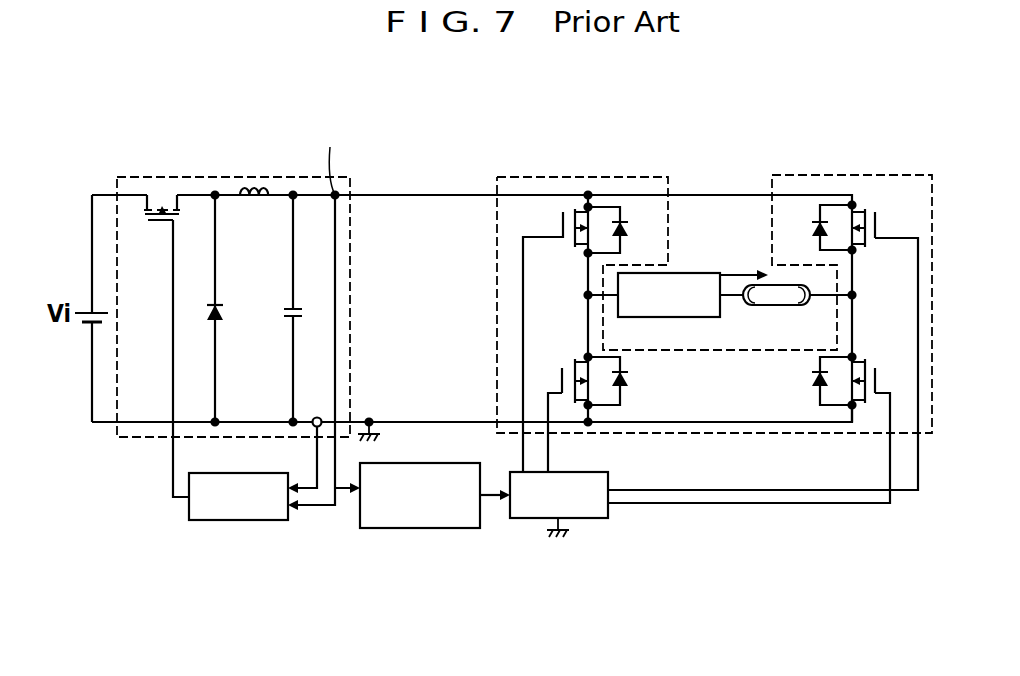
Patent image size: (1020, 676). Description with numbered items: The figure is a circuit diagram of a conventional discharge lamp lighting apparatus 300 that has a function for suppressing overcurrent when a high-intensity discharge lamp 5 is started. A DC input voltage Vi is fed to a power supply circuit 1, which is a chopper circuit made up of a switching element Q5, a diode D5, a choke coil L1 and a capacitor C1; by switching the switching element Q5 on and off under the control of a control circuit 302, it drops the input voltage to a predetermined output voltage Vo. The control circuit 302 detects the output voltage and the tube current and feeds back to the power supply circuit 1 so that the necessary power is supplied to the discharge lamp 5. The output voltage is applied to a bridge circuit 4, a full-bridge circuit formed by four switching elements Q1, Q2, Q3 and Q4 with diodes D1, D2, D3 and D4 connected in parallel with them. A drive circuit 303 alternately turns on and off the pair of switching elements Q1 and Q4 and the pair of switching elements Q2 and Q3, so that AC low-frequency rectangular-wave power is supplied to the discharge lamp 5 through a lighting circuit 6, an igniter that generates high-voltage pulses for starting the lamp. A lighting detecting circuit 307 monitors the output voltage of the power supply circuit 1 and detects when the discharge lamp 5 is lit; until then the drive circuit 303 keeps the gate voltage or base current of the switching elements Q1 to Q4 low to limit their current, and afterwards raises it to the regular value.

The power supply circuit 1 is at (340, 185).
The bridge circuit 4 is at (662, 187).
The discharge lamp 5 is at (793, 316).
The lighting circuit 6 is at (690, 273).
The discharge lamp lighting apparatus 300 is at (589, 583).
The control circuit 302 is at (215, 520).
The drive circuit 303 is at (520, 518).
The lighting detecting circuit 307 is at (383, 528).
The switching element Q1 is at (557, 332).
The switching element Q2 is at (561, 383).
The switching element Q3 is at (763, 346).
The switching element Q4 is at (757, 399).
The switching element Q5 is at (164, 346).
The diode D1 is at (623, 230).
The diode D2 is at (623, 381).
The diode D3 is at (816, 227).
The diode D4 is at (816, 381).
The diode D5 is at (230, 309).
The choke coil L1 is at (254, 210).
The capacitor C1 is at (305, 309).